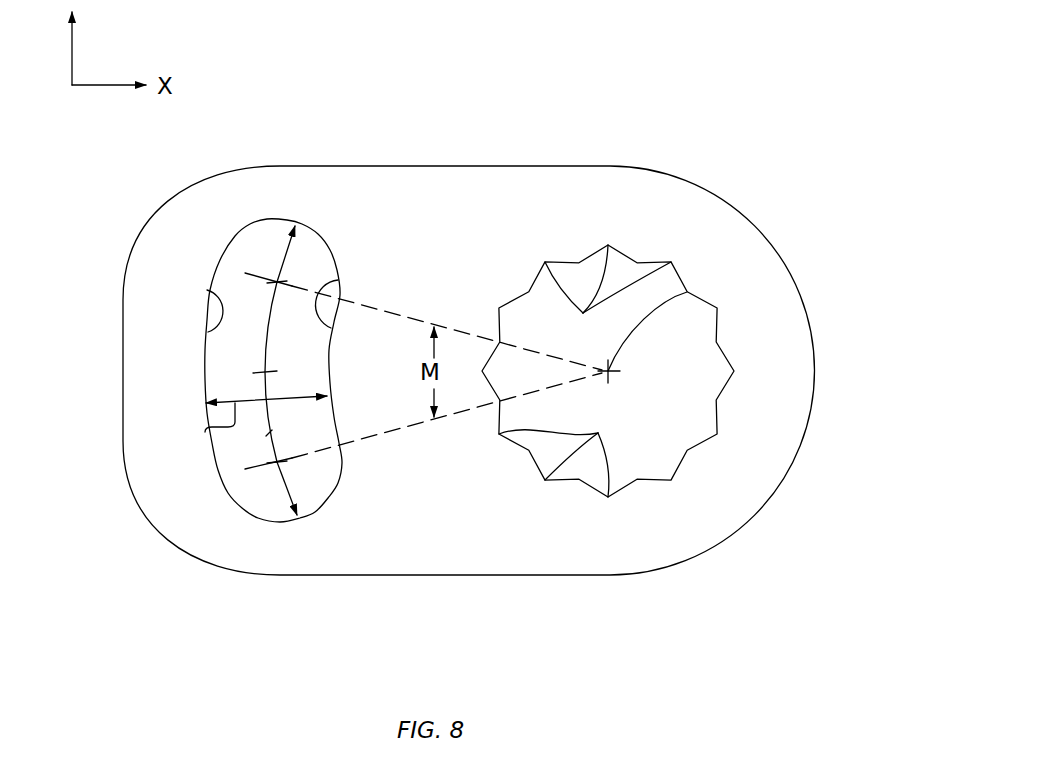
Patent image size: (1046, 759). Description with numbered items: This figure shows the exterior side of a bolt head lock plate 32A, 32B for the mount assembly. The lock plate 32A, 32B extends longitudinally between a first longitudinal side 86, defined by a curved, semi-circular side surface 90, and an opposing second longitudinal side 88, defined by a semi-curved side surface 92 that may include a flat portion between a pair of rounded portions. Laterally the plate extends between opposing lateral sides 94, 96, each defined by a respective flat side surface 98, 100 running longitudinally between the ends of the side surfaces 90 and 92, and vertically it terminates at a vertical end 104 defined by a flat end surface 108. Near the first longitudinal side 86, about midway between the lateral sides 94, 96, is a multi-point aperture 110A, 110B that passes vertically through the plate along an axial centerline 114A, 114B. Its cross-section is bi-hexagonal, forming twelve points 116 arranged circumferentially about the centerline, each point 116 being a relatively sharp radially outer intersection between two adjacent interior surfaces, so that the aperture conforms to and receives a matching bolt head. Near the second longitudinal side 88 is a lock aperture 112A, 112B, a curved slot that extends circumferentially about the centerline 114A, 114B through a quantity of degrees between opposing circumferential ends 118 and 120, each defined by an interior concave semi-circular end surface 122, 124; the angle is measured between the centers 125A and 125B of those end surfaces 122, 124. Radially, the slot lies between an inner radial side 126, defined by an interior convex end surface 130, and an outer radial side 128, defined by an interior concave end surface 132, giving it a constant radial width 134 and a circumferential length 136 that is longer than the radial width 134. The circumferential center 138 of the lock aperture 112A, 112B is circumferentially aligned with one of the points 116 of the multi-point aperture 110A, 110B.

The lock plate 32A is at (765, 84).
The lock plate 32B is at (716, 118).
The first longitudinal side 86 is at (462, 368).
The curved side surface 90 is at (462, 368).
The second longitudinal side 88 is at (462, 368).
The semi-curved side surface 92 is at (462, 368).
The lock plate lateral side 94 is at (462, 368).
The flat side surface 98 is at (462, 368).
The lock plate lateral side 96 is at (462, 368).
The flat side surface 100 is at (462, 368).
The lock plate vertical end 104 is at (462, 368).
The end surface 108 is at (816, 377).
The multi-point aperture 110A is at (740, 518).
The multi-point aperture 110B is at (680, 425).
The lock aperture 112A is at (290, 588).
The lock aperture 112B is at (273, 514).
The axial centerline 114A is at (672, 395).
The axial centerline 114B is at (688, 291).
The point 116 is at (593, 371).
The circumferential end 118 is at (256, 381).
The end surface 122 is at (267, 218).
The circumferential end 120 is at (408, 502).
The end surface 124 is at (328, 497).
The center 125A is at (277, 282).
The center 125B is at (277, 462).
The inner radial side 126 is at (375, 268).
The interior convex end surface 130 is at (338, 282).
The outer radial side 128 is at (124, 267).
The interior concave end surface 132 is at (207, 292).
The radial width 134 is at (202, 426).
The circumferential length 136 is at (268, 436).
The circumferential center 138 is at (264, 371).